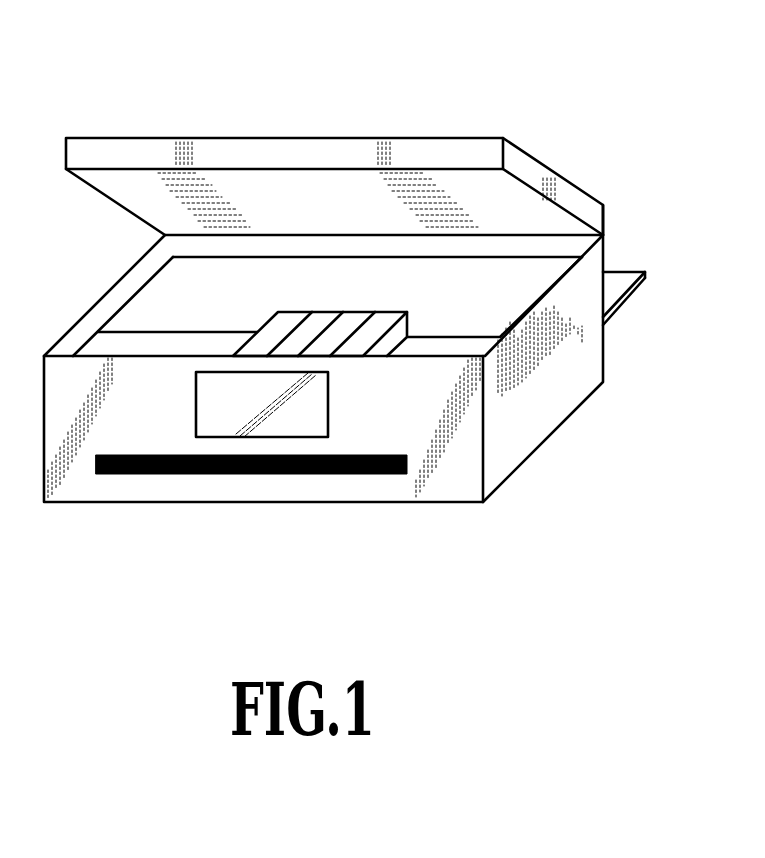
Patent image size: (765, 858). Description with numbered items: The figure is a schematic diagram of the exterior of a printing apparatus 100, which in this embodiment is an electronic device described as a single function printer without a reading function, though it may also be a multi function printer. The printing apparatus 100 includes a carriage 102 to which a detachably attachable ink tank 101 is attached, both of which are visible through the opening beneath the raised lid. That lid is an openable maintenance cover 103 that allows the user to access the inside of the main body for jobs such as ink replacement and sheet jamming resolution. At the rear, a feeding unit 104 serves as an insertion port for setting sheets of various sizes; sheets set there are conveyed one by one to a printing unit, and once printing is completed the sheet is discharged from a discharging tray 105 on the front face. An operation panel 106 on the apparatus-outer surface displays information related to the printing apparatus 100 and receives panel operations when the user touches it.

The printing apparatus 100 is at (397, 73).
The ink tank 101 is at (260, 332).
The carriage 102 is at (393, 302).
The maintenance cover 103 is at (477, 150).
The feeding unit 104 is at (623, 282).
The discharging tray 105 is at (375, 464).
The operation panel 106 is at (280, 427).